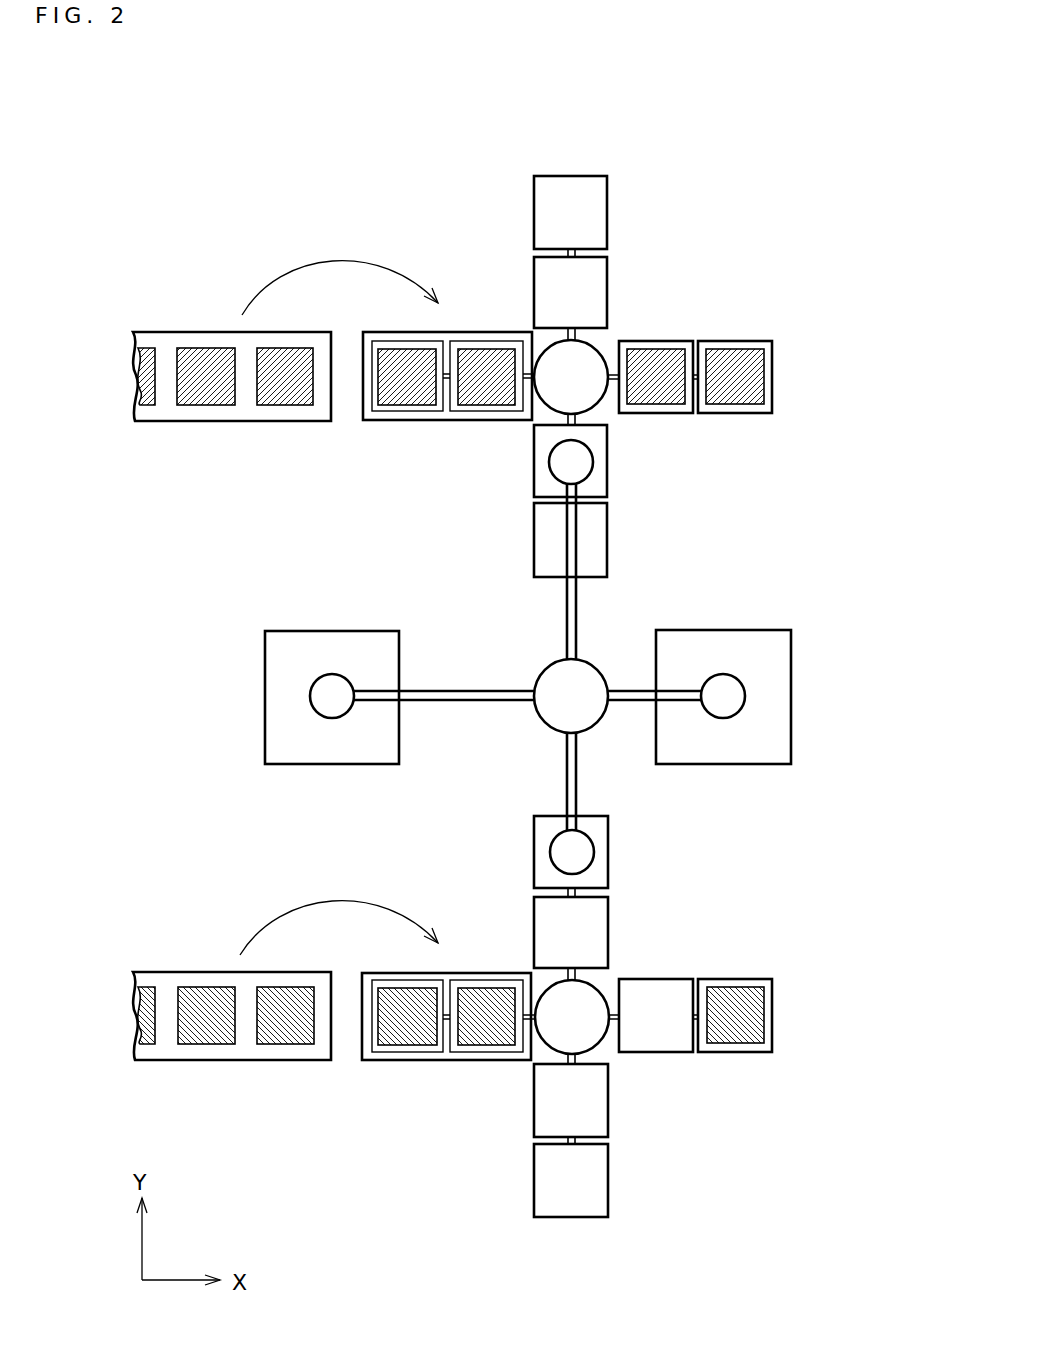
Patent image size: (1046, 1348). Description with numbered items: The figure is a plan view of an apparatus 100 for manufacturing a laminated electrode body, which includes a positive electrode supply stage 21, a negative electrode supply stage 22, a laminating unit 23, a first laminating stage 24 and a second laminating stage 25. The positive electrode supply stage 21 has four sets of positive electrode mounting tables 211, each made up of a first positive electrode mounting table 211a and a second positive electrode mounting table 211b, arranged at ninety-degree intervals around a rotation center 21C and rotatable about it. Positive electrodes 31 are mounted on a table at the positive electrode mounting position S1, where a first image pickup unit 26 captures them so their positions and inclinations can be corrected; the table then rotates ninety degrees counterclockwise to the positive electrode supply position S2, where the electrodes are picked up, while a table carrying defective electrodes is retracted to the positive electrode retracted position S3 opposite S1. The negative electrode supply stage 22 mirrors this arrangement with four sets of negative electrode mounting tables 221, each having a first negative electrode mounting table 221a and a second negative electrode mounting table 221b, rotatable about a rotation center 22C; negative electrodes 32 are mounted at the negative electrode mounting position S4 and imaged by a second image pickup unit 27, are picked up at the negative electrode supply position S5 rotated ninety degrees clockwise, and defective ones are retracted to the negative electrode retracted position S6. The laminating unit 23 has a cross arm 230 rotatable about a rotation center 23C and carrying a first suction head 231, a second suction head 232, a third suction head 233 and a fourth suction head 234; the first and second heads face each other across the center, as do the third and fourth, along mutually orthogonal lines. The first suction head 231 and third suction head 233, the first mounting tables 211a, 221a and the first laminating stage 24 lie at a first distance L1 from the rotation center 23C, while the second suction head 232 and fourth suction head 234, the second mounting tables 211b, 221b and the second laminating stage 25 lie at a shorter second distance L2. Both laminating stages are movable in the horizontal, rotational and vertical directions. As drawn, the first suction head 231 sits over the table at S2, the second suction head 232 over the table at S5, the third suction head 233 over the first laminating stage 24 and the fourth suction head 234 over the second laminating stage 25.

The apparatus for manufacturing a laminated electrode body 100 is at (745, 203).
The positive electrode supply stage 21 is at (593, 359).
The rotation center 21C is at (571, 377).
The negative electrode supply stage 22 is at (588, 1016).
The rotation center 22C is at (572, 1017).
The laminating unit 23 is at (509, 668).
The rotation center 23C is at (571, 697).
The cross arm 230 is at (424, 702).
The first suction head 231 is at (590, 448).
The second suction head 232 is at (550, 850).
The third suction head 233 is at (310, 697).
The fourth suction head 234 is at (745, 700).
The first laminating stage 24 is at (303, 630).
The second laminating stage 25 is at (757, 630).
The first image pickup unit 26 is at (444, 306).
The second image pickup unit 27 is at (448, 981).
The positive electrode 31 is at (392, 350).
The negative electrode 32 is at (398, 985).
The positive electrode mounting table 211 is at (593, 494).
The first positive electrode mounting table 211a is at (608, 453).
The second positive electrode mounting table 211b is at (608, 540).
The negative electrode mounting table 221 is at (588, 991).
The first negative electrode mounting table 221a is at (608, 934).
The second negative electrode mounting table 221b is at (608, 848).
The positive electrode mounting position S1 is at (463, 310).
The positive electrode supply position S2 is at (518, 537).
The positive electrode retracted position S3 is at (778, 370).
The negative electrode mounting position S4 is at (368, 1075).
The negative electrode supply position S5 is at (512, 885).
The negative electrode retracted position S6 is at (782, 1018).
The first distance L1 is at (571, 696).
The second distance L2 is at (571, 852).